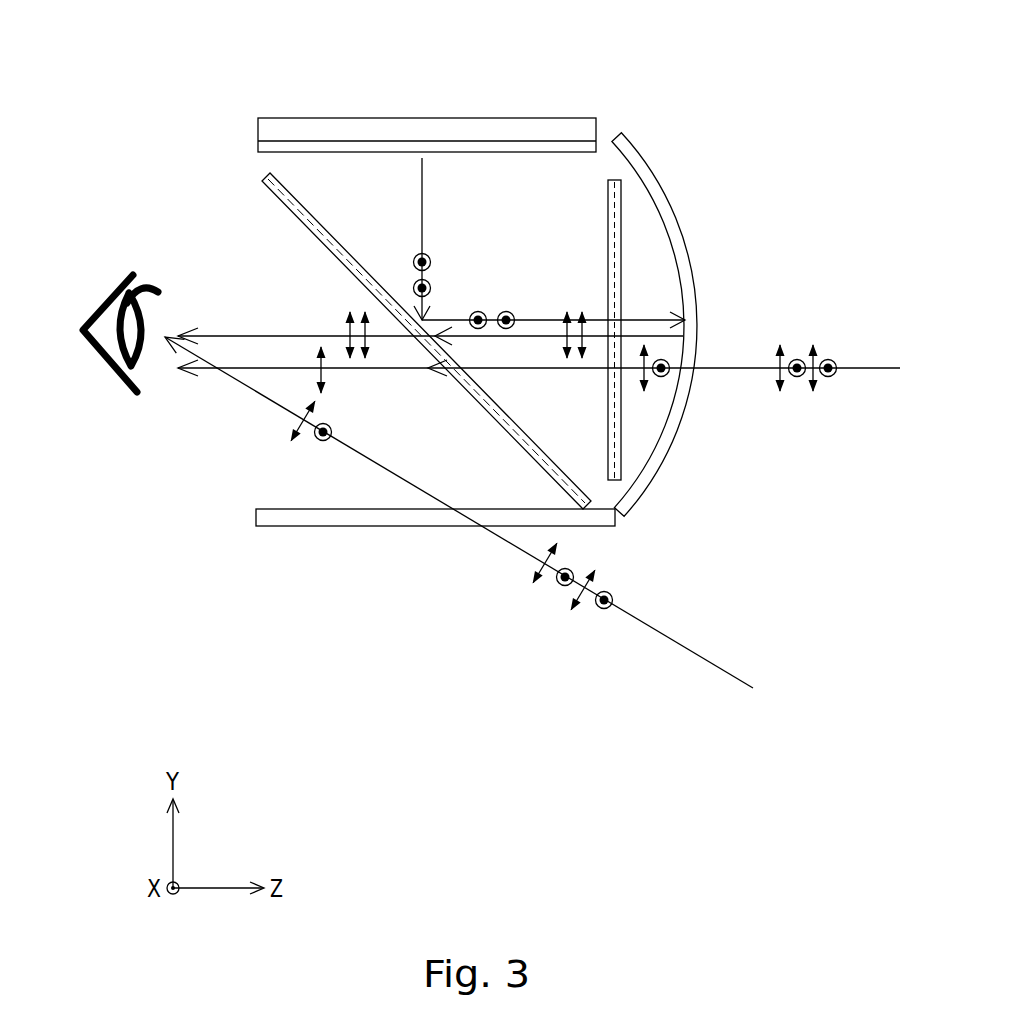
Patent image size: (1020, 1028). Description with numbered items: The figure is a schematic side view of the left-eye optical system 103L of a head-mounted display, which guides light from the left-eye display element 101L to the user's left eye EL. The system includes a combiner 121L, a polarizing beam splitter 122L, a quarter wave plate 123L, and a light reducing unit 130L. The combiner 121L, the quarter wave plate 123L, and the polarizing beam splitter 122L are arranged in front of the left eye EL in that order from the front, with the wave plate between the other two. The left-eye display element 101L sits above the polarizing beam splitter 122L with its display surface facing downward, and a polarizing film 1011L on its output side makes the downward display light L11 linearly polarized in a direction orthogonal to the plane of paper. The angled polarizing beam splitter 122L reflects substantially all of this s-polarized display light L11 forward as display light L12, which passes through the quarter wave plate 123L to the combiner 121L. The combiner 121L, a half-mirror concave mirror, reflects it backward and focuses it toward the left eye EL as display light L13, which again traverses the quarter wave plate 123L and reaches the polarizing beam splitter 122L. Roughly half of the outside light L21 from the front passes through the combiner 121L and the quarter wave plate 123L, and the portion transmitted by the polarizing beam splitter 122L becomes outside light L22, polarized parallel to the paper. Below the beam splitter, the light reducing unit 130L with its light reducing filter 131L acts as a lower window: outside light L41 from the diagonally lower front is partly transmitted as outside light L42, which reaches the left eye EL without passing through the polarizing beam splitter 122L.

The left-eye display element 101L is at (356, 118).
The polarizing film 1011L is at (538, 141).
The left-eye optical system 103L is at (738, 262).
The combiner 121L is at (692, 255).
The 1/4 wave plate 123L is at (710, 305).
The polarizing beam splitter 122L is at (260, 183).
The light reducing unit 130L is at (320, 555).
The light reducing filter 131L is at (290, 528).
The left eye EL is at (107, 368).
The display light L11 is at (424, 195).
The display light L12 is at (548, 318).
The display light L13 is at (541, 337).
The outside light L21 is at (863, 370).
The outside light L22 is at (373, 370).
The outside light L41 is at (722, 668).
The outside light L42 is at (275, 403).